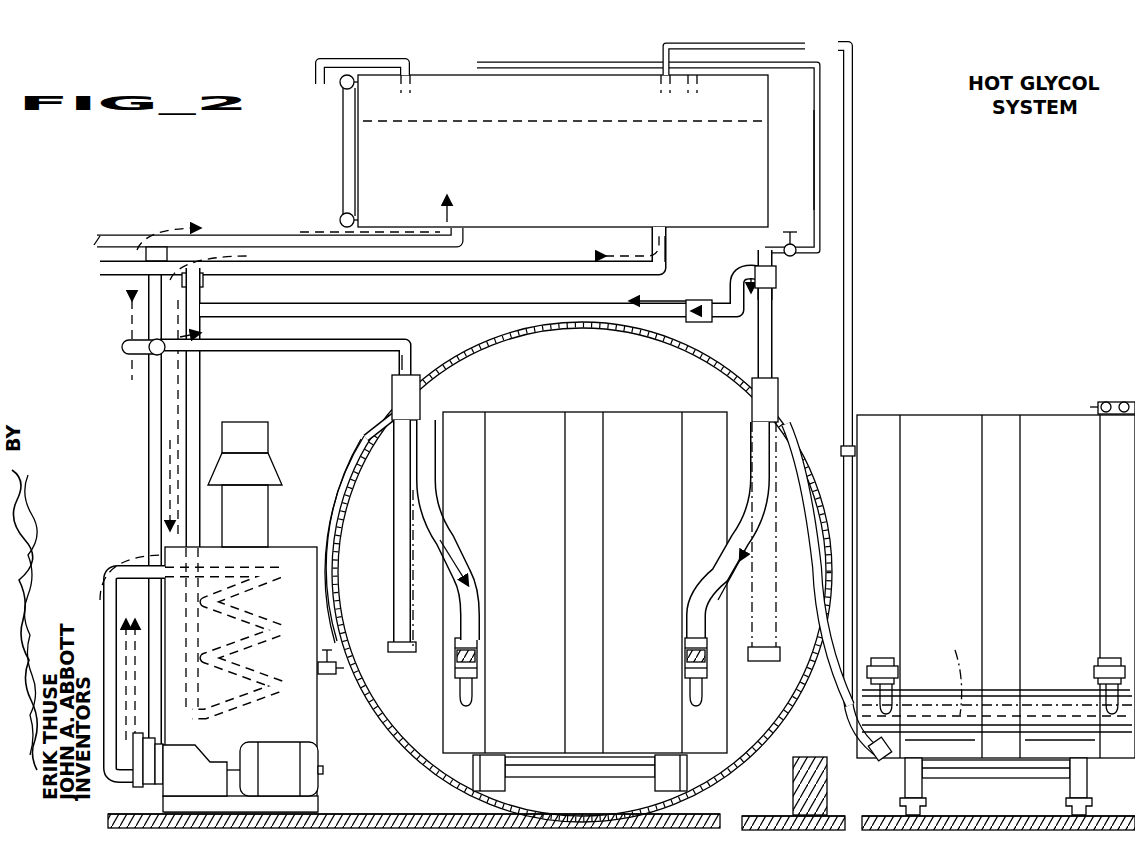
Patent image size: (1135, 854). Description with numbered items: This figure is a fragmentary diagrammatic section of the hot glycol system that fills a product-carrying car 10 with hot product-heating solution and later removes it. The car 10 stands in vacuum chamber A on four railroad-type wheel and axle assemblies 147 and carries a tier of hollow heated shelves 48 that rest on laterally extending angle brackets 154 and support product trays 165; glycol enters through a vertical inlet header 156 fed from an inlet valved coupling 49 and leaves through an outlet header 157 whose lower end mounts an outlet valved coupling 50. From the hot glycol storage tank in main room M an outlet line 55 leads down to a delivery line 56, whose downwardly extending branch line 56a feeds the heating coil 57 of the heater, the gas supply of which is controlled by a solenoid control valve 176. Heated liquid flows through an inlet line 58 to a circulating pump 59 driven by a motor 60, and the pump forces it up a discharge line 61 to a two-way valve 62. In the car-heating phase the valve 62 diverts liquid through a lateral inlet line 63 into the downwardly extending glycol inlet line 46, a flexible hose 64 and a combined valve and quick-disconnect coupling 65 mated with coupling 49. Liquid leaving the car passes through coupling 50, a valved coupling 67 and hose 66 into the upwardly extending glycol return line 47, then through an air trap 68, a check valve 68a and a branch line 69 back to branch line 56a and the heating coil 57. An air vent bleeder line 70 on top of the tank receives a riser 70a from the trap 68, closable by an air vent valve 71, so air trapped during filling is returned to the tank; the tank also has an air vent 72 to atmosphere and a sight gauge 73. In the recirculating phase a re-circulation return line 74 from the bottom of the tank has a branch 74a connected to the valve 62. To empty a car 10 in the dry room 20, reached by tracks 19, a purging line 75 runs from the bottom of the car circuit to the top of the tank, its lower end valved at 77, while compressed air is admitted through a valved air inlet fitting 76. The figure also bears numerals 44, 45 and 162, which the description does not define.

The product-carrying car 10 is at (548, 408).
The tracks 19 is at (1066, 806).
The dry room 20 is at (990, 345).
The supply pipe 44 is at (372, 445).
The supply pipe 45 is at (804, 465).
The hot glycol inlet line 46 is at (392, 368).
The glycol return line 47 is at (775, 300).
The hollow heated shelves 48 is at (1028, 705).
The inlet valved coupling 49 is at (478, 672).
The outlet valved coupling 50 is at (684, 672).
The outlet line 55 is at (674, 243).
The delivery line 56 is at (504, 268).
The branch line 56a is at (201, 405).
The heating coil 57 is at (250, 714).
The inlet line 58 is at (108, 623).
The circulating pump 59 is at (180, 764).
The motor 60 is at (275, 769).
The discharge line 61 is at (150, 430).
The two way valve 62 is at (165, 352).
The lateral inlet line 63 is at (316, 349).
The flexible hose 64 is at (430, 504).
The combined valve and quick disconnect coupling 65 is at (380, 652).
The hose 66 is at (738, 512).
The valved coupling 67 is at (684, 650).
The air trap 68 is at (730, 298).
The check valve 68a is at (705, 323).
The branch line 69 is at (542, 314).
The air vent bleeder line 70 is at (585, 63).
The riser 70a is at (812, 145).
The air vent valve 71 is at (793, 256).
The air vent 72 is at (333, 63).
The sight gauge 73 is at (342, 165).
The re-circulation return line 74 is at (257, 240).
The branch 74a is at (150, 290).
The purging line 75 is at (660, 44).
The valved air inlet fitting 76 is at (1118, 402).
The purge line valve 77 is at (876, 760).
The wheel and axle assemblies 147 is at (654, 786).
The angle brackets 154 is at (925, 712).
The inlet header 156 is at (478, 482).
The outlet header 157 is at (682, 482).
The block section 162 is at (563, 500).
The product trays 165 is at (962, 675).
The solenoid control valve 176 is at (327, 676).